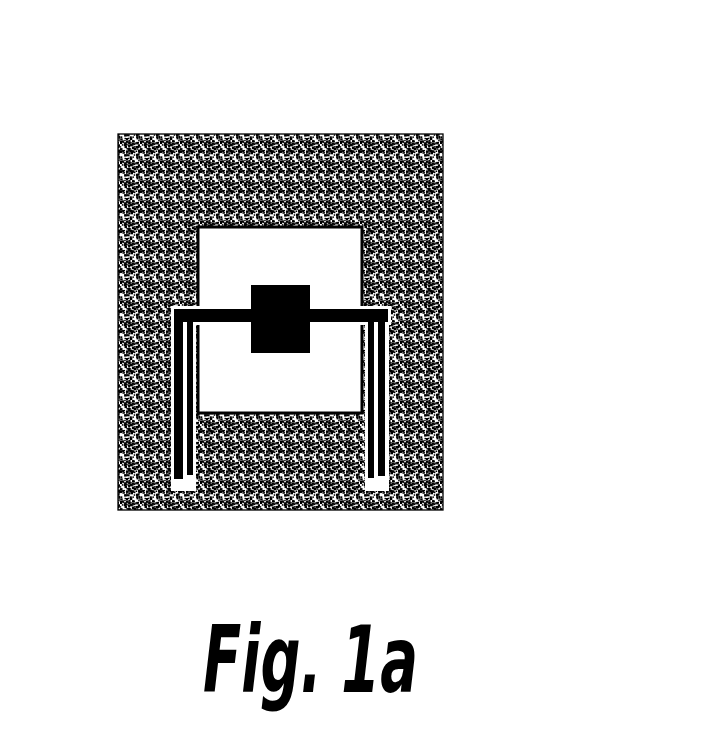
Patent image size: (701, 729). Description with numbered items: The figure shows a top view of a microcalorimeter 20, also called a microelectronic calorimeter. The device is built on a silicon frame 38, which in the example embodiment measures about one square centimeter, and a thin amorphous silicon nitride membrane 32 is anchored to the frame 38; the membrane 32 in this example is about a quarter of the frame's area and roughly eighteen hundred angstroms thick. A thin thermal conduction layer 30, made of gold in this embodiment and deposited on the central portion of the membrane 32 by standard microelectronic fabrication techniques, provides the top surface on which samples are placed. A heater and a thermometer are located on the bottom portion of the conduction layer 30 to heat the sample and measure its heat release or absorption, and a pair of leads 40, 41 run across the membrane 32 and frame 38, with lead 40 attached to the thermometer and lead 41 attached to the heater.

The microcalorimeter 20 is at (312, 46).
The thermal conduction layer 30 is at (267, 285).
The membrane 32 is at (328, 292).
The silicon frame 38 is at (420, 151).
The lead 40 is at (390, 382).
The lead 41 is at (173, 378).